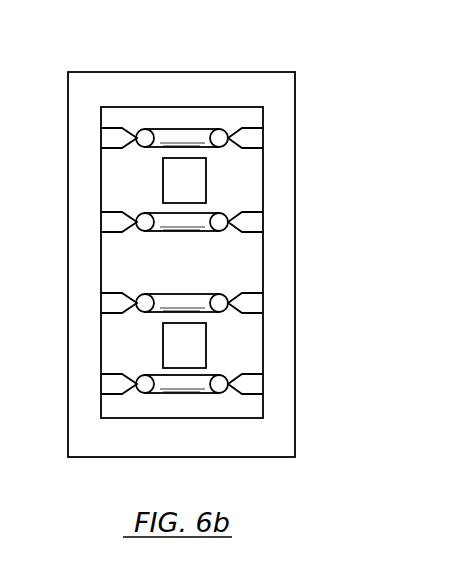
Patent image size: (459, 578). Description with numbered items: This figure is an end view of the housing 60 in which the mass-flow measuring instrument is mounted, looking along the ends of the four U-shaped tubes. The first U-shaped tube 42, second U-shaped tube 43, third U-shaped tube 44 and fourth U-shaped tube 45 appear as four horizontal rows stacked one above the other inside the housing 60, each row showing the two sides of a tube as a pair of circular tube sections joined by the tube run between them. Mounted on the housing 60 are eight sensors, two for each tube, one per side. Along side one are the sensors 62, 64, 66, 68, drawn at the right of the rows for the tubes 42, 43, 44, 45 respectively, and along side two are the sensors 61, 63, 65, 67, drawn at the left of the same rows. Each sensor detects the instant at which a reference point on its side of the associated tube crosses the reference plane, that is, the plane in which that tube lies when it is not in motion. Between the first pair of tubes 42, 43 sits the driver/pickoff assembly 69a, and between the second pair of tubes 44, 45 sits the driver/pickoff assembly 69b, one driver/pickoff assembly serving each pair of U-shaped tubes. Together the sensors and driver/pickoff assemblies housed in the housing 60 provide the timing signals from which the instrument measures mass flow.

The housing 60 is at (261, 82).
The first U-shaped tube 42 is at (170, 137).
The second U-shaped tube 43 is at (172, 226).
The third U-shaped tube 44 is at (168, 298).
The fourth U-shaped tube 45 is at (167, 398).
The sensor 61 is at (108, 137).
The sensor 62 is at (255, 137).
The sensor 63 is at (108, 221).
The sensor 64 is at (255, 221).
The sensor 65 is at (108, 303).
The sensor 66 is at (255, 303).
The sensor 67 is at (108, 384).
The sensor 68 is at (255, 384).
The driver/pickoff assembly 69a is at (184, 180).
The driver/pickoff assembly 69b is at (184, 345).